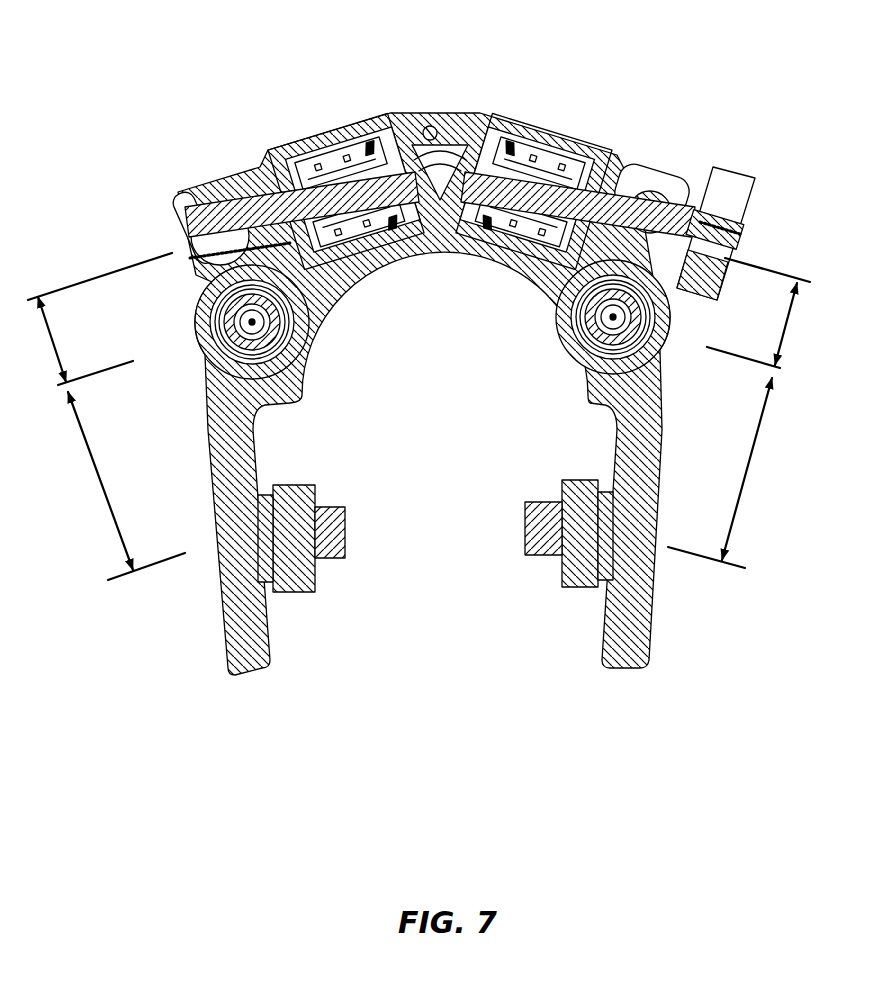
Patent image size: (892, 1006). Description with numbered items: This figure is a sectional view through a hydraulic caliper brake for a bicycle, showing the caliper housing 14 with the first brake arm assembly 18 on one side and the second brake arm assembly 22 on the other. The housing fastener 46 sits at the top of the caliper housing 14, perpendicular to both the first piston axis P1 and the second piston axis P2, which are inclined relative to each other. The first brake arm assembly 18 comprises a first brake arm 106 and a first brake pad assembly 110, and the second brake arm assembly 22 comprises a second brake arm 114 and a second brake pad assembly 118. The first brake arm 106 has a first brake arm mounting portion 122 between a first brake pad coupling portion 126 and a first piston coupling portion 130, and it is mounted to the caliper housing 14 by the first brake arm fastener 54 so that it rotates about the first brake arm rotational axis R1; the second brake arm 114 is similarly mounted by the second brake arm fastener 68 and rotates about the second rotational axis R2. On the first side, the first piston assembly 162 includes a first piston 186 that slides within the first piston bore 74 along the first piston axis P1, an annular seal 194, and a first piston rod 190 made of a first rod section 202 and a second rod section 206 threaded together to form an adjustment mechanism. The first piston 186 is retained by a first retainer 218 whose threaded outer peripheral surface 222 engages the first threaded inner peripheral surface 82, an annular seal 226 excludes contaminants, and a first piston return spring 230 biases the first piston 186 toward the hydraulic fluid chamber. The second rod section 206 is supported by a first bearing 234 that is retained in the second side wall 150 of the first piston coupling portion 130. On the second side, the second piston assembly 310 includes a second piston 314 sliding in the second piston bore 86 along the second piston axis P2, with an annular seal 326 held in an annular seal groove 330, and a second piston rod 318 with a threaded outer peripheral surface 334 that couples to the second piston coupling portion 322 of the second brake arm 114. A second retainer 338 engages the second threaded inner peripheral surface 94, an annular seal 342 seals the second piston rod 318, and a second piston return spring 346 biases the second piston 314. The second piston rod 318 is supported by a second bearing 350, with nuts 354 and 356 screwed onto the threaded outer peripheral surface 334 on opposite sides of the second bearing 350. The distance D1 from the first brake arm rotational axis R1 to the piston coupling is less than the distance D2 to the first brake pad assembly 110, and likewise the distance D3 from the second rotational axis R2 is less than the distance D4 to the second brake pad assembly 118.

The caliper housing 14 is at (438, 110).
The first brake arm assembly 18 is at (655, 661).
The second brake arm assembly 22 is at (216, 649).
The housing fastener 46 is at (430, 126).
The first brake arm fastener 54 is at (612, 324).
The second brake arm fastener 68 is at (233, 353).
The first piston bore 74 is at (536, 165).
The first threaded inner peripheral surface 82 is at (553, 268).
The second piston bore 86 is at (330, 158).
The second threaded inner peripheral surface 94 is at (298, 160).
The first brake arm 106 is at (650, 435).
The first brake pad assembly 110 is at (577, 474).
The second brake arm 114 is at (214, 410).
The second brake pad assembly 118 is at (289, 474).
The first brake arm mounting portion 122 is at (650, 343).
The first brake pad coupling portion 126 is at (637, 623).
The first piston coupling portion 130 is at (722, 168).
The second side wall 150 is at (686, 216).
The first piston assembly 162 is at (435, 236).
The first piston 186 is at (478, 128).
The first piston rod 190 is at (502, 238).
The annular seal 194 is at (495, 135).
The first rod section 202 is at (556, 160).
The second rod section 206 is at (700, 188).
The first retainer 218 is at (590, 180).
The threaded outer peripheral surface 222 is at (580, 150).
The annular seal 226 is at (592, 172).
The first piston return spring 230 is at (522, 226).
The first bearing 234 is at (630, 215).
The second piston assembly 310 is at (381, 116).
The second piston 314 is at (386, 128).
The second piston rod 318 is at (268, 190).
The second piston coupling portion 322 is at (167, 223).
The annular seal 326 is at (367, 110).
The annular seal groove 330 is at (397, 242).
The threaded outer peripheral surface 334 is at (250, 182).
The second retainer 338 is at (283, 190).
The annular seal 342 is at (306, 350).
The second piston return spring 346 is at (352, 118).
The second bearing 350 is at (214, 267).
The nut 354 is at (178, 203).
The nut 356 is at (256, 205).
The first piston axis P1 is at (758, 262).
The second piston axis P2 is at (148, 257).
The first brake arm rotational axis R1 is at (640, 315).
The second brake arm rotational axis R2 is at (250, 321).
The distance D1 is at (756, 325).
The distance D2 is at (720, 473).
The distance D3 is at (85, 341).
The distance D4 is at (126, 486).